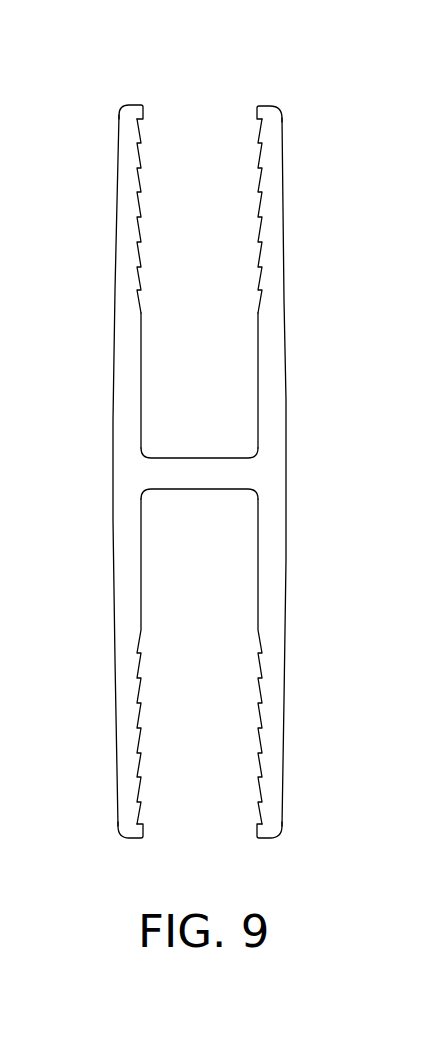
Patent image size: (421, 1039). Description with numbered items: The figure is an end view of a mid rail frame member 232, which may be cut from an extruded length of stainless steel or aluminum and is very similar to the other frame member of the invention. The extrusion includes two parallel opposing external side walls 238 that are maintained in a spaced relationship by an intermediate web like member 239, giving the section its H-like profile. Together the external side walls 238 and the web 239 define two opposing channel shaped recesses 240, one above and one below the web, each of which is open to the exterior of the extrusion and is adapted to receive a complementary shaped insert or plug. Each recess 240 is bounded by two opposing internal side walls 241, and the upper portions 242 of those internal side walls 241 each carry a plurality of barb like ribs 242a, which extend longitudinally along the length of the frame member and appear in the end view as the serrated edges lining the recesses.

The mid rail frame member 232 is at (171, 460).
The external side walls 238 is at (122, 433).
The intermediate web like member 239 is at (178, 484).
The channel shaped recesses 240 is at (181, 114).
The internal side walls 241 is at (141, 352).
The upper portions of the side walls 242 is at (259, 181).
The barb like ribs 242a is at (140, 187).